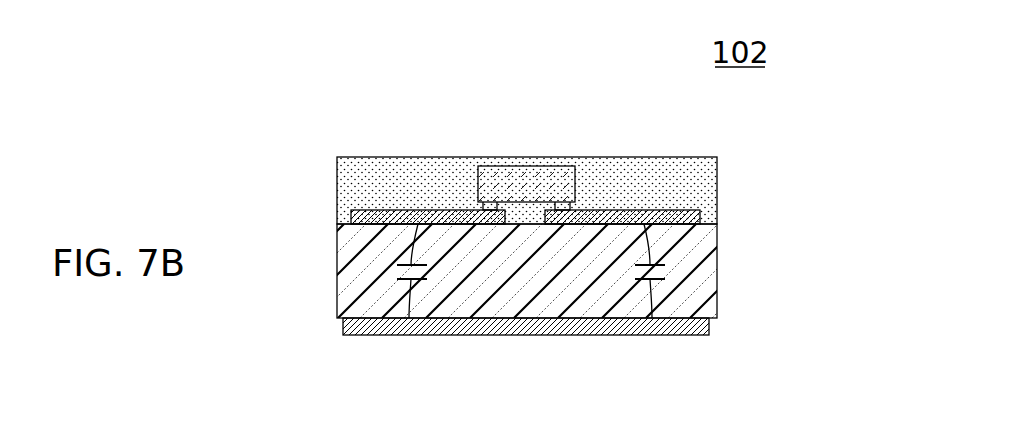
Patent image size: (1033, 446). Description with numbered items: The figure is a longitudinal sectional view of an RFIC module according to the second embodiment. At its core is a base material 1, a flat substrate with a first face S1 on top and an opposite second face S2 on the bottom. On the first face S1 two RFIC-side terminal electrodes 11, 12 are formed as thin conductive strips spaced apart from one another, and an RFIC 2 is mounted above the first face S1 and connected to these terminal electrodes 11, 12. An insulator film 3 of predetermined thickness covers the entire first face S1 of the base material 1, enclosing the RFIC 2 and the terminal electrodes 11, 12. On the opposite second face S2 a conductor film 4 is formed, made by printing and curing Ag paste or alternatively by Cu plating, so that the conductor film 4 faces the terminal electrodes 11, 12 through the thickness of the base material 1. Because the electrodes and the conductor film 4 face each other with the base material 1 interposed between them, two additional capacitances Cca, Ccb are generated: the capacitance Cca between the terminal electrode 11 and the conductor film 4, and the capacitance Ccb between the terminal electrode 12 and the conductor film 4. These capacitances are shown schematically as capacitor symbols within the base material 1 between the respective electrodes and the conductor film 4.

The base material 1 is at (705, 268).
The RFIC 2 is at (528, 166).
The insulator film 3 is at (715, 186).
The conductor film 4 is at (518, 335).
The RFIC-side terminal electrode 11 is at (385, 210).
The RFIC-side terminal electrode 12 is at (680, 210).
The additional capacitance Cca is at (441, 271).
The additional capacitance Ccb is at (621, 271).
The first face S1 is at (328, 224).
The second face S2 is at (328, 318).